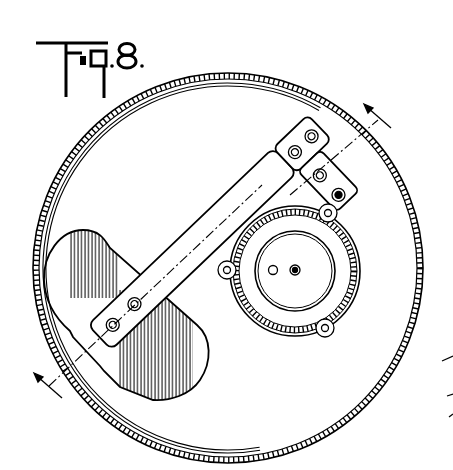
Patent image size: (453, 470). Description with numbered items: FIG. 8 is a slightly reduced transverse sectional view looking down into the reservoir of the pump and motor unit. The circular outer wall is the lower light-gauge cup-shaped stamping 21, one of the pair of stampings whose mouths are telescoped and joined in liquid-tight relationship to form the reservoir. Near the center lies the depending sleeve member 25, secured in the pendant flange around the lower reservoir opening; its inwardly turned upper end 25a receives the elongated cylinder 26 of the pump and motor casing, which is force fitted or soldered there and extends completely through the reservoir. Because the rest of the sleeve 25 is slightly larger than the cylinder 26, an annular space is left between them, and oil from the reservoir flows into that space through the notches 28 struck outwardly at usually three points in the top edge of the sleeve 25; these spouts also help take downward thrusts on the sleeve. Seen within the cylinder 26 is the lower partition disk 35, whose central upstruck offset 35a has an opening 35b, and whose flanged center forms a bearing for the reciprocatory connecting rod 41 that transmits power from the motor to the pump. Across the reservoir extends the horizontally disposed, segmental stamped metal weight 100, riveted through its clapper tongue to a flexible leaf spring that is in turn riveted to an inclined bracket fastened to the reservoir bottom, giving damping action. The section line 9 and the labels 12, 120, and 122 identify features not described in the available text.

The section line 9- 9 is at (218, 263).
The container body 12 is at (440, 421).
The cup-shaped stamping 21 is at (420, 235).
The sleeve member 25 is at (307, 331).
The inwardly turned upper end of sleeve 25a is at (351, 243).
The cylinder 26 is at (277, 327).
The notches 28 is at (338, 215).
The lower partition disk 35 is at (333, 304).
The upstruck offset 35a is at (327, 277).
The opening 35b is at (273, 275).
The connecting rod 41 is at (297, 268).
The stamped metal weight 100 is at (103, 254).
The handle 120 is at (433, 399).
The handle link 122 is at (430, 364).